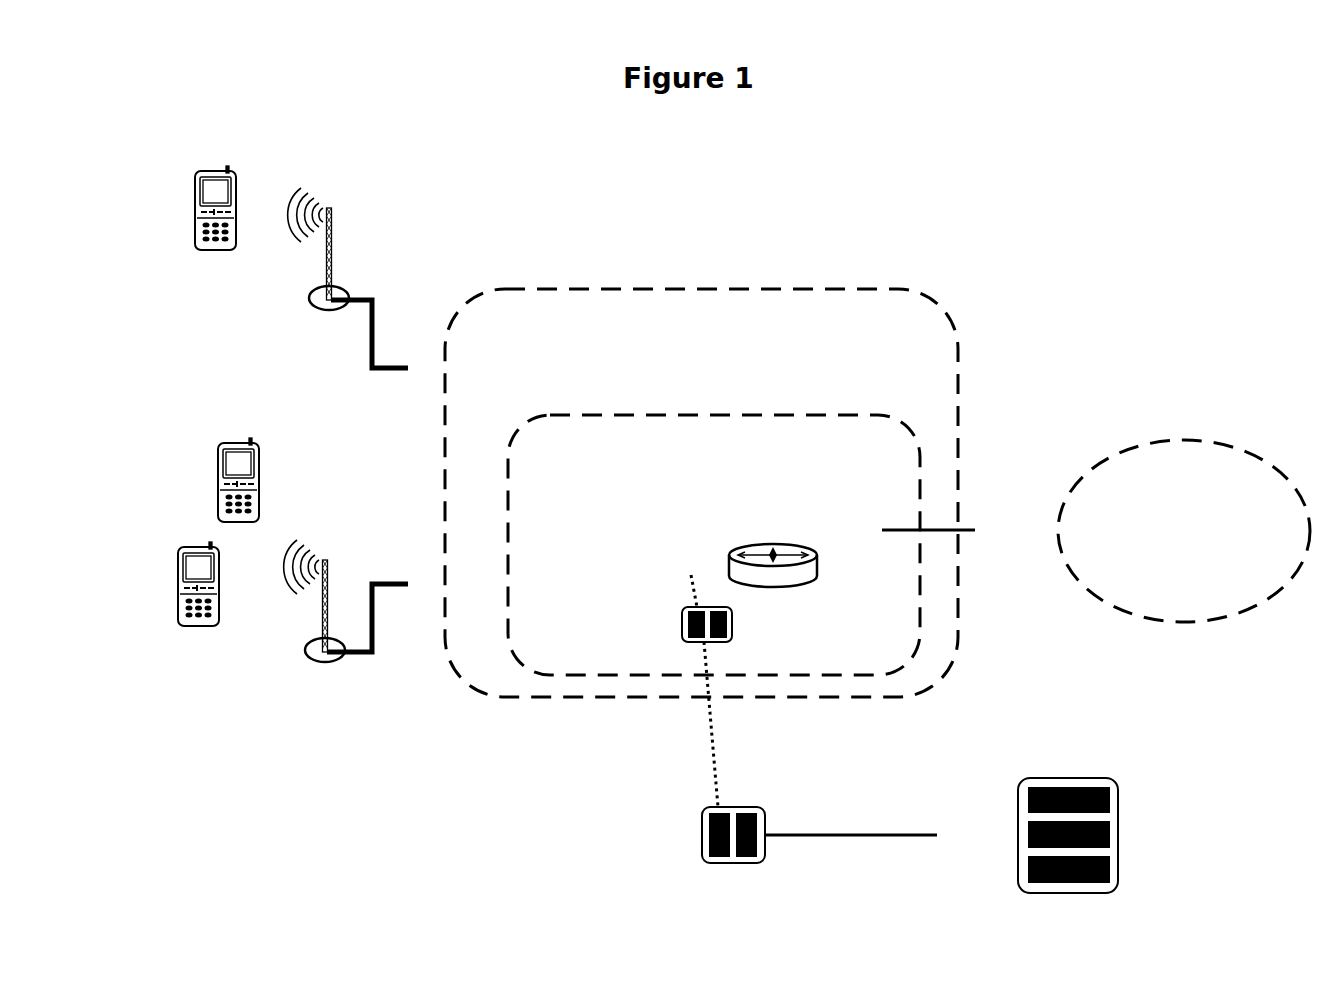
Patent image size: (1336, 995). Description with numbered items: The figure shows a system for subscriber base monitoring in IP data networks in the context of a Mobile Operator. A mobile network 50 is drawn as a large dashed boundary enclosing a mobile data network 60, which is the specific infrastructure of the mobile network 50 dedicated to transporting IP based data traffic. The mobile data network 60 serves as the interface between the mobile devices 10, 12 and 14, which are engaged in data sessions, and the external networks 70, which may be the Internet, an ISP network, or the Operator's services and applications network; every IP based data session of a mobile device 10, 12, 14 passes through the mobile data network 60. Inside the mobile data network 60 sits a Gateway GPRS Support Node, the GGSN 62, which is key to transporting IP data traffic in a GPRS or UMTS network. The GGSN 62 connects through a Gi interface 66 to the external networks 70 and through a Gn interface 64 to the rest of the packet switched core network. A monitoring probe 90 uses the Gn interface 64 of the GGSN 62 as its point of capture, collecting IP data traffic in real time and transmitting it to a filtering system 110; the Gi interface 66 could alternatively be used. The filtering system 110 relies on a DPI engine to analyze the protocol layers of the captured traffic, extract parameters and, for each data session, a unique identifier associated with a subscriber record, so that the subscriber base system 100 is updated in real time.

The mobile device 10 is at (192, 188).
The mobile device 12 is at (214, 458).
The mobile device 14 is at (164, 548).
The mobile network 50 is at (667, 245).
The mobile data network 60 is at (695, 369).
The Gateway GPRS Support Node (GGSN) 62 is at (779, 502).
The Gn interface 64 is at (683, 546).
The Gi interface 66 is at (855, 544).
The external networks 70 is at (1187, 440).
The monitoring probe 90 is at (620, 597).
The subscriber base system 100 is at (1190, 791).
The filtering system 110 is at (644, 804).